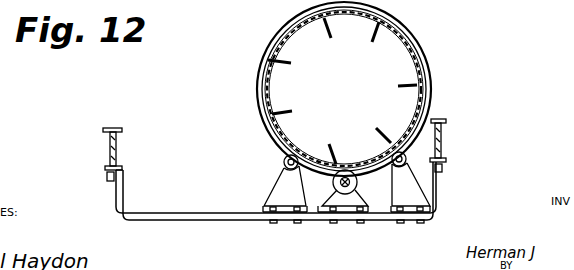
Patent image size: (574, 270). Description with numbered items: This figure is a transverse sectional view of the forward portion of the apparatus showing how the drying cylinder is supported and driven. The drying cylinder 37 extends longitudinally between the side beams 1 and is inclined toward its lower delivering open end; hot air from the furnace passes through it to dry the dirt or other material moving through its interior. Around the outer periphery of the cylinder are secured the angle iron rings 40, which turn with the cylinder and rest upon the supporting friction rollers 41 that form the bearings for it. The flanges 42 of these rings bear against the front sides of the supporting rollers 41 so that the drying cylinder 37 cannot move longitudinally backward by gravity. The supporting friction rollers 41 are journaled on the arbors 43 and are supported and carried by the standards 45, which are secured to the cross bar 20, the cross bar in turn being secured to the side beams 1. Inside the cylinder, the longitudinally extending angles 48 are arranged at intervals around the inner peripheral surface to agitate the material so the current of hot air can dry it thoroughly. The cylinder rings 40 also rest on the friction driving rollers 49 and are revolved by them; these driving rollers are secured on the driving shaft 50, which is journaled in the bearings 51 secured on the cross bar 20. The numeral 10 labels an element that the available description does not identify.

The beams 1 is at (110, 152).
The frame 10 is at (338, 82).
The cross bar 20 is at (231, 214).
The drying cylinder 37 is at (412, 56).
The angle iron rings 40 is at (418, 83).
The supporting friction roller 41 is at (284, 160).
The flanges 42 is at (432, 100).
The arbors 43 is at (283, 167).
The standards 45 is at (283, 186).
The longitudinally extending angles 48 is at (372, 43).
The friction driving rollers 49 is at (357, 183).
The driving shaft 50 is at (340, 190).
The bearings 51 is at (349, 200).